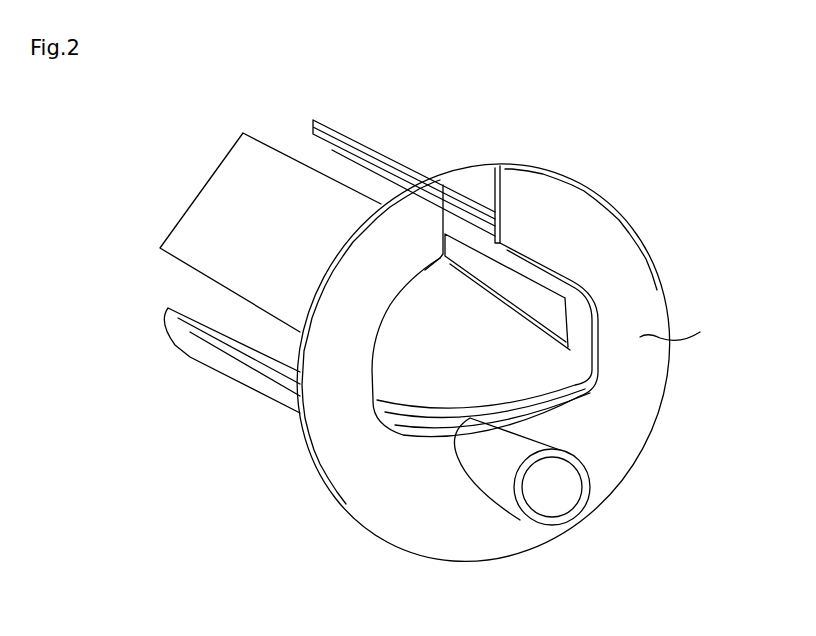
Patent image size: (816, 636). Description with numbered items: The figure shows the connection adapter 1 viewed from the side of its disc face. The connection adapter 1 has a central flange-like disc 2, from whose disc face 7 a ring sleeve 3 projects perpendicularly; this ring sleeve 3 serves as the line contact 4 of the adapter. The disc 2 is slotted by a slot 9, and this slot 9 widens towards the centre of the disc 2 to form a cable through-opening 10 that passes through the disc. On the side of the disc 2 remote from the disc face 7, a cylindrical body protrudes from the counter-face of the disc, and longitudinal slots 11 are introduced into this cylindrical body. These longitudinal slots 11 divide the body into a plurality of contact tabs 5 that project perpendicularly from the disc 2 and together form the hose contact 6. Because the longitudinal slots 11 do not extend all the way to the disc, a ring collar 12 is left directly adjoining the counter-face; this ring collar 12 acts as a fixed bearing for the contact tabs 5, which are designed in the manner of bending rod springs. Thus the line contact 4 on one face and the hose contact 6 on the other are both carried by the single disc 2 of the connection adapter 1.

The connection adapter 1 is at (326, 548).
The disc 2 is at (647, 240).
The ring sleeve 3 is at (561, 528).
The line contact 4 is at (516, 536).
The contact tabs 5 is at (391, 157).
The hose contact 6 is at (160, 279).
The disc face 7 is at (675, 337).
The slot 9 is at (478, 188).
The cable through-opening 10 is at (474, 365).
The longitudinal slots 11 is at (505, 289).
The ring collar 12 is at (578, 310).